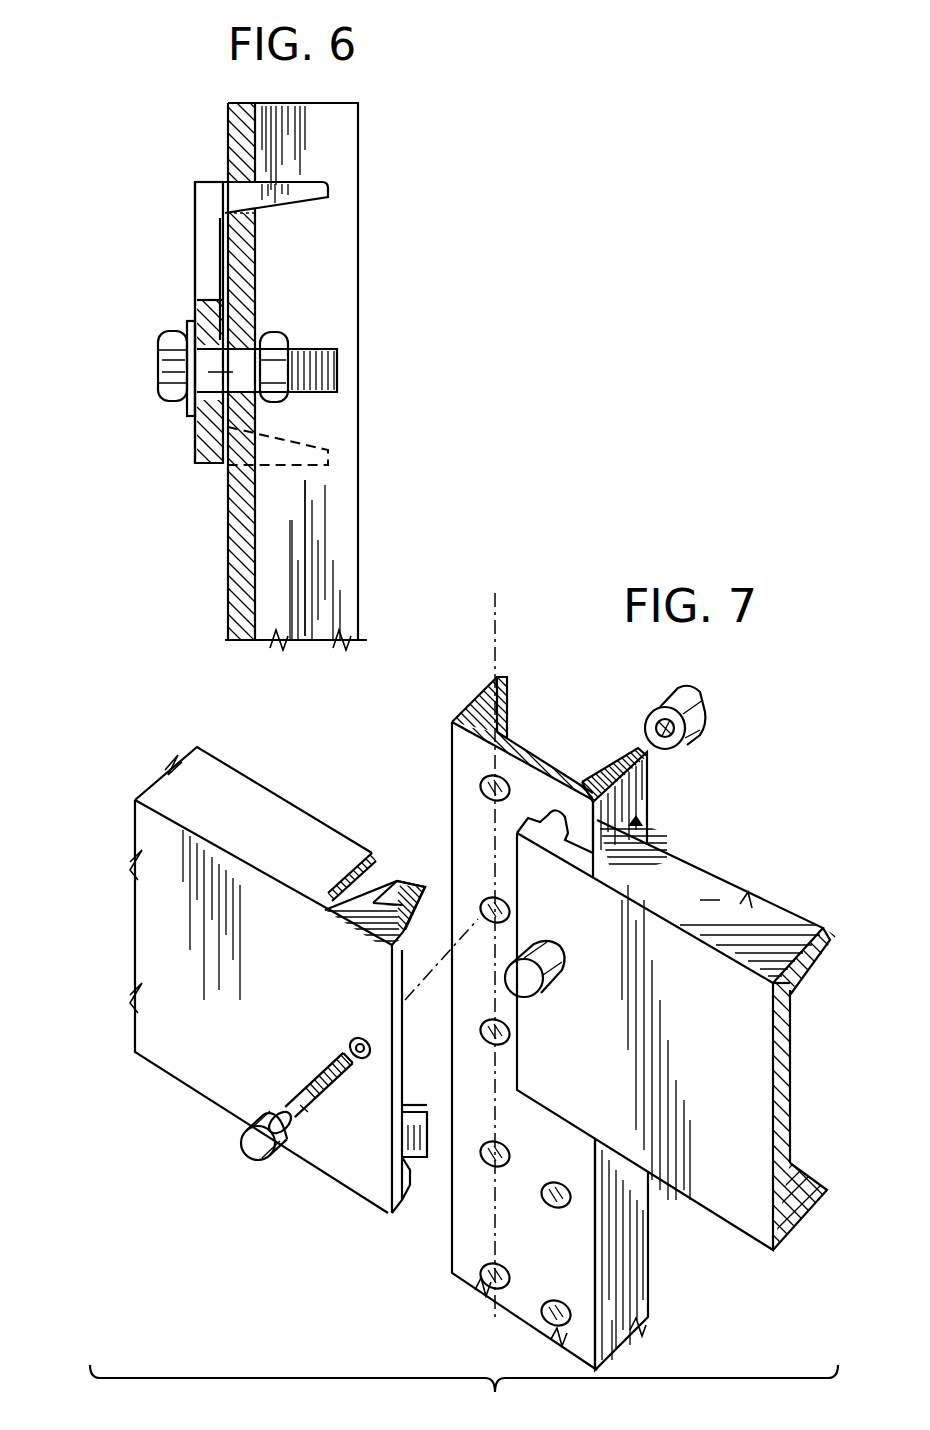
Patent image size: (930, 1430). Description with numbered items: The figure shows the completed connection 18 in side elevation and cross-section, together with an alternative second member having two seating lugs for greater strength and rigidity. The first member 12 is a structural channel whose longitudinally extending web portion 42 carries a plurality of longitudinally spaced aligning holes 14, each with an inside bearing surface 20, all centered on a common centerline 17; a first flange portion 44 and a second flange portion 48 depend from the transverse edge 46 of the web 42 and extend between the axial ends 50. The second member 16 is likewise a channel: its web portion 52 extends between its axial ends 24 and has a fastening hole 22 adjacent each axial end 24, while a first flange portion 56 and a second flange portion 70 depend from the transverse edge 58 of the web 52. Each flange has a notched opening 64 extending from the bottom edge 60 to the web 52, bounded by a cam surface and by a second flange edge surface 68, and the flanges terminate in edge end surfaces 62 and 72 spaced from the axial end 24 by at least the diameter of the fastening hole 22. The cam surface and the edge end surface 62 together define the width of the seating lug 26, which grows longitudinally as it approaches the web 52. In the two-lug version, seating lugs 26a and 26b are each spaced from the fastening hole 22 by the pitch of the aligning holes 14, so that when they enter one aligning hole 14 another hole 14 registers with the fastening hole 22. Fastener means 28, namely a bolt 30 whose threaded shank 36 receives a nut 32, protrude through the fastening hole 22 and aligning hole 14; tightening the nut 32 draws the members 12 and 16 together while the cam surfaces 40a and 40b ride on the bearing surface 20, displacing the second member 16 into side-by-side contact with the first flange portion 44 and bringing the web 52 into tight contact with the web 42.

In FIG. 6, the first member 12 is at (364, 487).
In FIG. 7, the first member 12 is at (687, 1032).
In FIG. 6, the aligning holes 14 is at (212, 190).
In FIG. 7, the aligning holes 14 is at (552, 1324).
In FIG. 6, the second member 16 is at (248, 294).
In FIG. 7, the second member 16 is at (450, 1001).
In FIG. 7, the centerline 17 is at (497, 623).
In FIG. 6, the completed connection 18 is at (145, 189).
In FIG. 7, the inside bearing surface 20 is at (483, 780).
In FIG. 6, the fastening hole 22 is at (195, 358).
In FIG. 7, the fastening hole 22 is at (366, 1058).
In FIG. 6, the axial end 24 is at (203, 218).
In FIG. 7, the axial end 24 is at (523, 878).
In FIG. 6, the seating lug 26 is at (326, 176).
In FIG. 7, the seating lug 26a is at (411, 876).
In FIG. 7, the seating lug 26b is at (457, 1215).
In FIG. 6, the fastener means 28 is at (150, 392).
In FIG. 7, the fastener means 28 is at (232, 1161).
In FIG. 6, the bolt 30 is at (180, 402).
In FIG. 7, the bolt 30 is at (250, 1103).
In FIG. 6, the nut 32 is at (275, 400).
In FIG. 7, the nut 32 is at (683, 693).
In FIG. 6, the threaded shank 36 is at (320, 347).
In FIG. 7, the cam surface 40a is at (398, 885).
In FIG. 7, the cam surface 40b is at (420, 1107).
In FIG. 6, the web portion 42 is at (245, 248).
In FIG. 7, the web portion 42 is at (577, 1268).
In FIG. 7, the first flange portion 44 is at (633, 1252).
In FIG. 7, the transverse edge 46 is at (640, 1313).
In FIG. 6, the second flange portion 48 is at (337, 582).
In FIG. 7, the second flange portion 48 is at (487, 680).
In FIG. 6, the axial ends 50 is at (228, 108).
In FIG. 7, the axial ends 50 is at (550, 762).
In FIG. 6, the web portion 52 is at (212, 280).
In FIG. 7, the web portion 52 is at (727, 1042).
In FIG. 7, the first flange portion 56 is at (747, 900).
In FIG. 6, the transverse edge 58 is at (200, 184).
In FIG. 7, the transverse edge 58 is at (813, 948).
In FIG. 7, the bottom edge 60 is at (545, 972).
In FIG. 6, the edge end surface 62 is at (313, 192).
In FIG. 7, the edge end surface 62 is at (397, 905).
In FIG. 7, the notched opening 64 is at (368, 898).
In FIG. 7, the second flange edge surface 68 is at (623, 820).
In FIG. 7, the second flange portion 70 is at (807, 1220).
In FIG. 7, the edge end surface 72 is at (407, 1182).